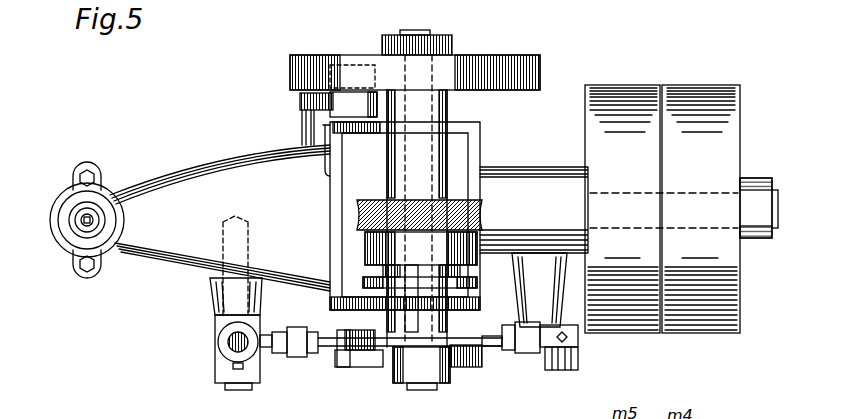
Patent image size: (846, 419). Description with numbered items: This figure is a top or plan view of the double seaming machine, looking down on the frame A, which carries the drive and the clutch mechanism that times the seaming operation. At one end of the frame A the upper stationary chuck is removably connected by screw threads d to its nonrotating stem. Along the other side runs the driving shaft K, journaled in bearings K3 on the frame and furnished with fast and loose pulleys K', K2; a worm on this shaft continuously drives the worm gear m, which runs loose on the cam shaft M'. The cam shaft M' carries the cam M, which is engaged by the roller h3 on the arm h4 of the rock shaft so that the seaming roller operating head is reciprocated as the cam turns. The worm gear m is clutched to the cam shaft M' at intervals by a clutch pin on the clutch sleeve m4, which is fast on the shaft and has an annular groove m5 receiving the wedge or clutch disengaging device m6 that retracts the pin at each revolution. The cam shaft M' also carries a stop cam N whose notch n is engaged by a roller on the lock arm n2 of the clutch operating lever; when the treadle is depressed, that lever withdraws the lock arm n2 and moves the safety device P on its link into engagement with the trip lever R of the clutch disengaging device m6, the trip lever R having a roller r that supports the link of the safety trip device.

The screw threads d is at (77, 236).
The frame A is at (220, 218).
The bearings K3 is at (534, 210).
The arm h4 is at (300, 104).
The roller h3 is at (345, 62).
The cam M is at (415, 56).
The cam shaft M' is at (417, 210).
The clutch sleeve m4 is at (363, 245).
The worm gear m is at (371, 198).
The clutch disengaging device m6 is at (421, 248).
The annular groove m5 is at (468, 273).
The trip lever R is at (230, 347).
The safety device P is at (295, 357).
The roller r is at (342, 353).
The stop cam N is at (395, 358).
The lock arm n2 is at (458, 370).
The notch n is at (487, 346).
The fast pulley K' is at (661, 189).
The loose pulley K2 is at (700, 82).
The driving shaft K is at (759, 183).